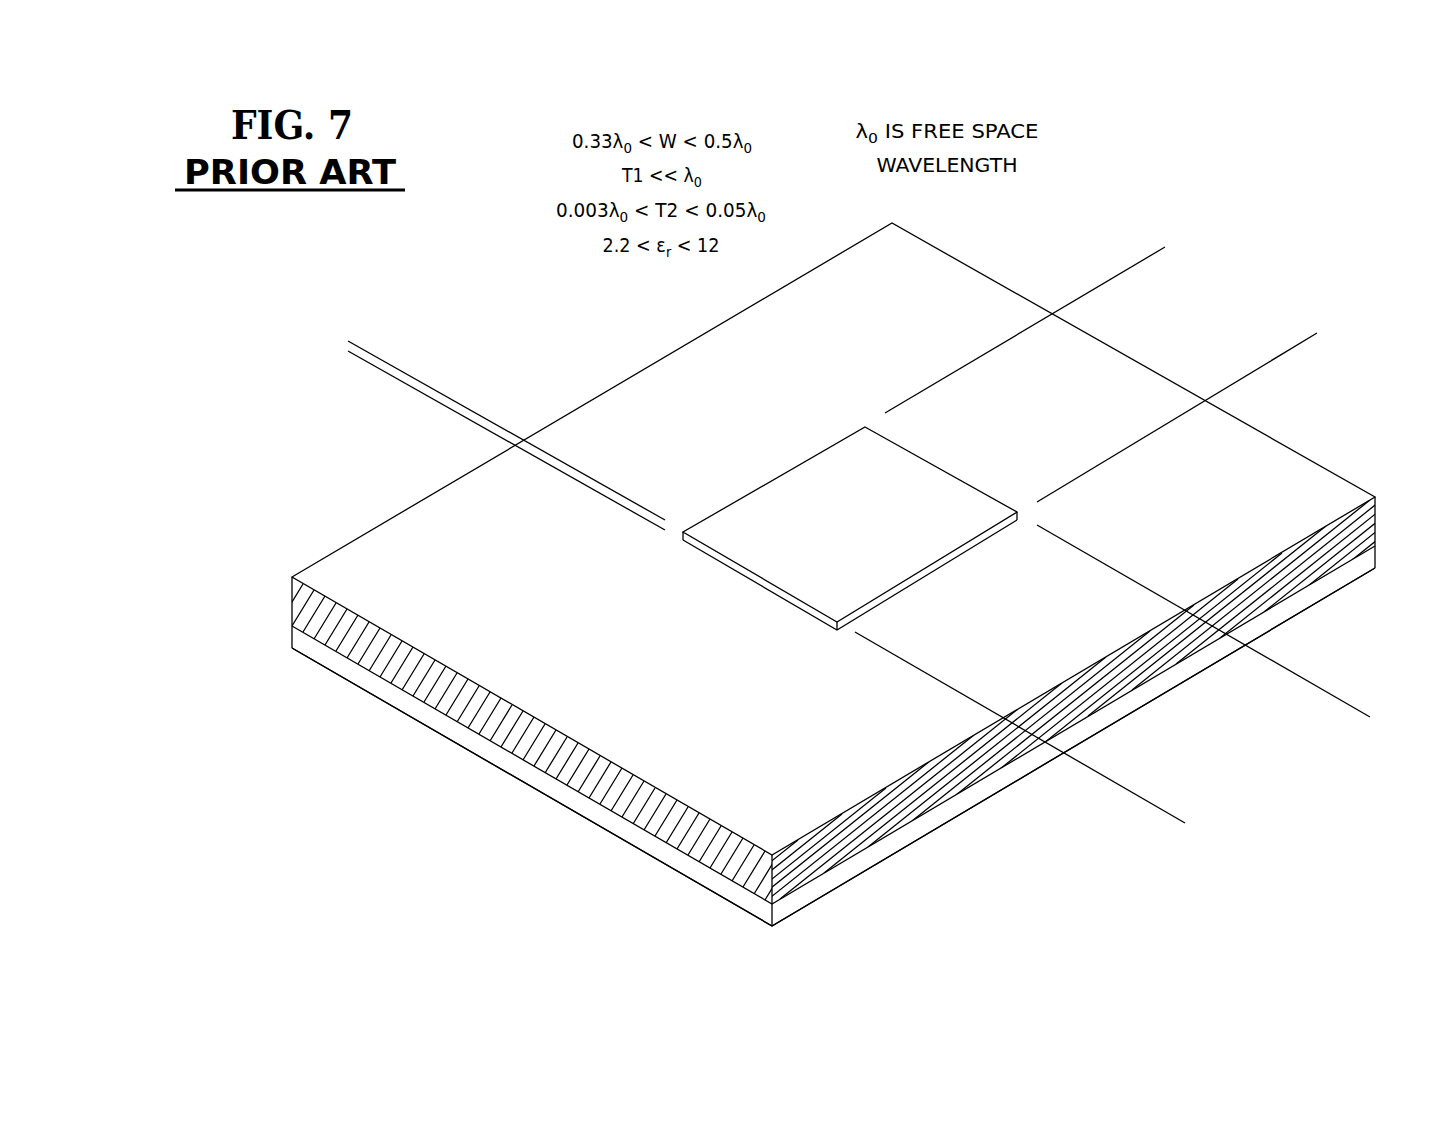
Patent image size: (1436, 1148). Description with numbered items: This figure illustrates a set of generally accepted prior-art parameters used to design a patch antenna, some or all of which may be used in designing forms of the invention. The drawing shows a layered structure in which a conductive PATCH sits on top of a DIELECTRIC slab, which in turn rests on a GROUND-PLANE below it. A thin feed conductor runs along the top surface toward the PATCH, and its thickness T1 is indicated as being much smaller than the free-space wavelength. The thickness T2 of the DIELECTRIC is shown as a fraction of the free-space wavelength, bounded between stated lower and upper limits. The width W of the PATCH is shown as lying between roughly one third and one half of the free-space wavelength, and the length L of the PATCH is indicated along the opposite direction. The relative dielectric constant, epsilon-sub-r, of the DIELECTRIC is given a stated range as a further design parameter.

The patch thickness T1 is at (381, 457).
The dielectric thickness T2 is at (224, 490).
The patch width W is at (1128, 272).
The patch length L is at (1317, 688).
The patch PATCH is at (820, 527).
The dielectric DIELECTRIC is at (530, 705).
The ground plane GROUND-PLANE is at (597, 828).